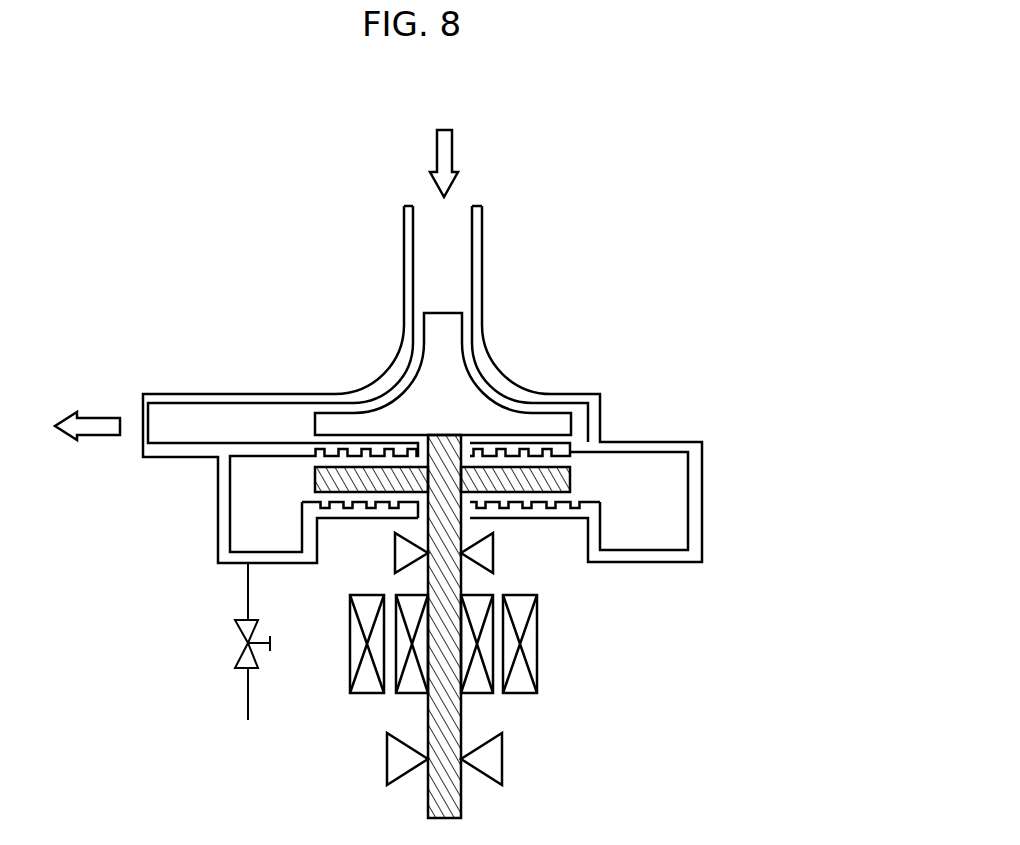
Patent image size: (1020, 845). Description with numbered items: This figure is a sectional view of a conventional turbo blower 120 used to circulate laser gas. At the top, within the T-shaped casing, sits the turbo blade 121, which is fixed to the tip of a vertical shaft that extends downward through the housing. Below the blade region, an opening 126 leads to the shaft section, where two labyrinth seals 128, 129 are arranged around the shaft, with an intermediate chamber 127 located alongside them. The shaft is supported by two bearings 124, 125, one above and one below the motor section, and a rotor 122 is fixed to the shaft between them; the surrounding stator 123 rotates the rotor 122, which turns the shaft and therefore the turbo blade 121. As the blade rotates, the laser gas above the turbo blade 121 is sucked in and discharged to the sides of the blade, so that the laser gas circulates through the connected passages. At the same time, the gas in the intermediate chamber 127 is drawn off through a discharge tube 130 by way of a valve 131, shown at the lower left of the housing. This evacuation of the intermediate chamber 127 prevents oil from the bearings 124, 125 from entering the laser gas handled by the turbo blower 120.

The turbo blower 120 is at (612, 187).
The turbo blade 121 is at (467, 392).
The rotor 122 is at (478, 683).
The stator 123 is at (537, 645).
The bearing 124 is at (494, 553).
The bearing 125 is at (502, 762).
The opening 126 is at (478, 435).
The intermediate chamber 127 is at (668, 540).
The labyrinth seal 128 is at (568, 465).
The labyrinth seal 129 is at (568, 497).
The discharge tube 130 is at (248, 600).
The valve 131 is at (240, 655).